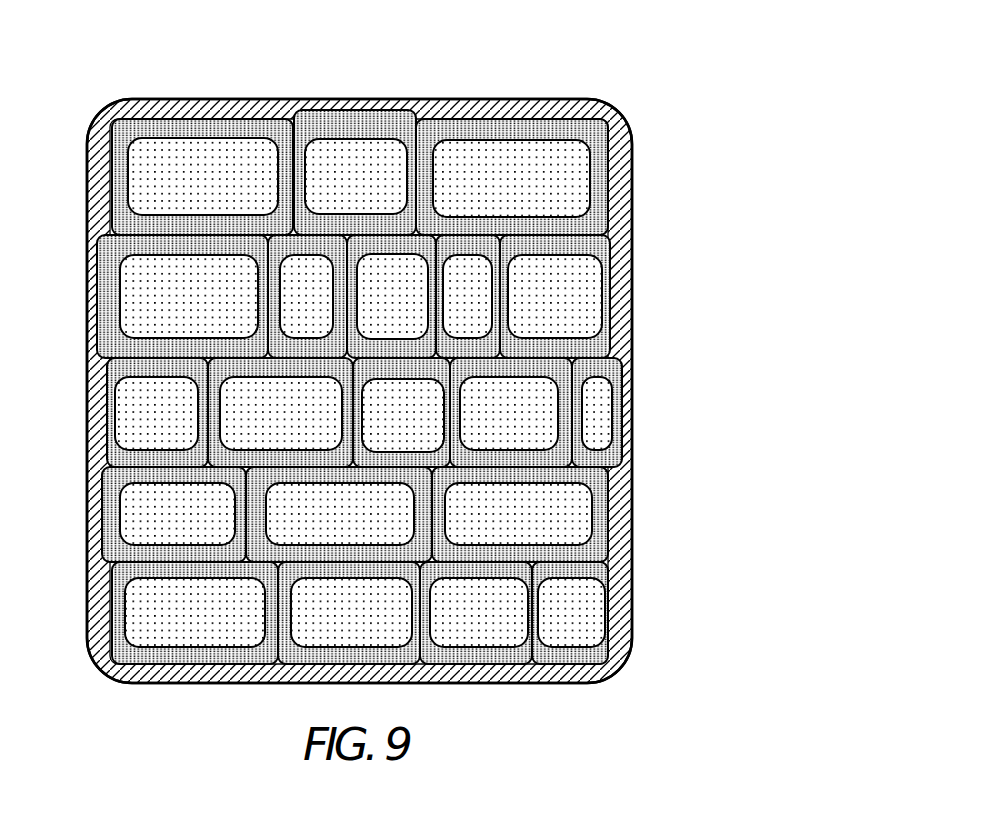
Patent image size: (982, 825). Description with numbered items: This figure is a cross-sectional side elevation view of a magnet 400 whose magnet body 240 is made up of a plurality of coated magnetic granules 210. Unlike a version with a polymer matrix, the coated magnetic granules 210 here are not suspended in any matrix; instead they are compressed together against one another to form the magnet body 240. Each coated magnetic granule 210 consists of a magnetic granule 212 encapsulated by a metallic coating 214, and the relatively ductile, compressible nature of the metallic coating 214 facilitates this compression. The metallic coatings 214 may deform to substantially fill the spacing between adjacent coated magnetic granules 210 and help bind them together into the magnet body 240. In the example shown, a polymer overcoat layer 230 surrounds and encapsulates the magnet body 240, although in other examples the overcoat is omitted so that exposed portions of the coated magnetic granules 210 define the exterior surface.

The magnet 400 is at (575, 72).
The polymer overcoat layer 230 is at (622, 222).
The magnet body 240 is at (605, 112).
The coated magnetic granules 210 is at (207, 110).
The metallic coating 214 is at (160, 128).
The magnetic granule 212 is at (246, 152).